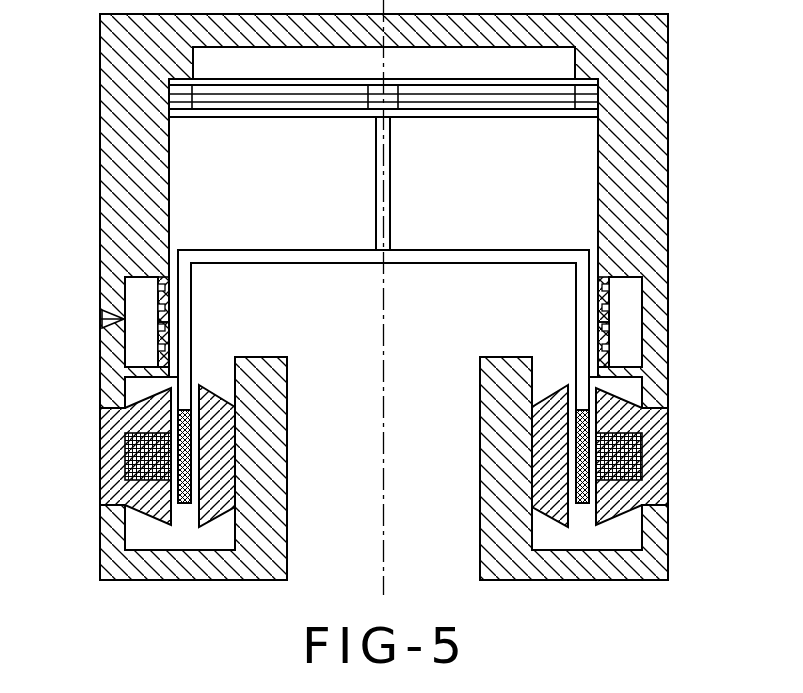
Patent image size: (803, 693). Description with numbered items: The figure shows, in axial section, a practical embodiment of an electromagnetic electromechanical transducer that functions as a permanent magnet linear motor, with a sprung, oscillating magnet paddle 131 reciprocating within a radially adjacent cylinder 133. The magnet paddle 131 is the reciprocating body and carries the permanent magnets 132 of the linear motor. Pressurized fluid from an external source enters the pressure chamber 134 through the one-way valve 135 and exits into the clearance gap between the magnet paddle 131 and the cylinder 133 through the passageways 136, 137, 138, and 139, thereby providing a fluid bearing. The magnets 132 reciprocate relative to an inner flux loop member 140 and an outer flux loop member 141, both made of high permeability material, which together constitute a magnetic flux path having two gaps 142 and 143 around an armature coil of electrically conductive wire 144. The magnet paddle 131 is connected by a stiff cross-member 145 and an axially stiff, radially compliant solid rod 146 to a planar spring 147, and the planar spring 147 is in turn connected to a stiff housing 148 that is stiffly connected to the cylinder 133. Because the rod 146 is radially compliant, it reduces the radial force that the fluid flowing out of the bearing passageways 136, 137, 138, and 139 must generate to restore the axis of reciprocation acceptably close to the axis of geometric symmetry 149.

The magnet paddle 131 is at (183, 383).
The permanent magnets 132 is at (182, 504).
The cylinder 133 is at (171, 212).
The pressure chamber 134 is at (133, 285).
The one-way valve 135 is at (118, 316).
The passageway 136 is at (166, 350).
The passageway 137 is at (165, 298).
The passageway 138 is at (605, 350).
The passageway 139 is at (607, 299).
The inner flux loop member 140 is at (213, 452).
The outer flux loop member 141 is at (117, 465).
The gap 142 is at (588, 522).
The gap 143 is at (573, 387).
The armature coil 144 is at (627, 450).
The cross-member 145 is at (327, 263).
The solid rod 146 is at (391, 200).
The planar spring 147 is at (298, 97).
The housing 148 is at (602, 55).
The axis of geometric symmetry 149 is at (383, 297).